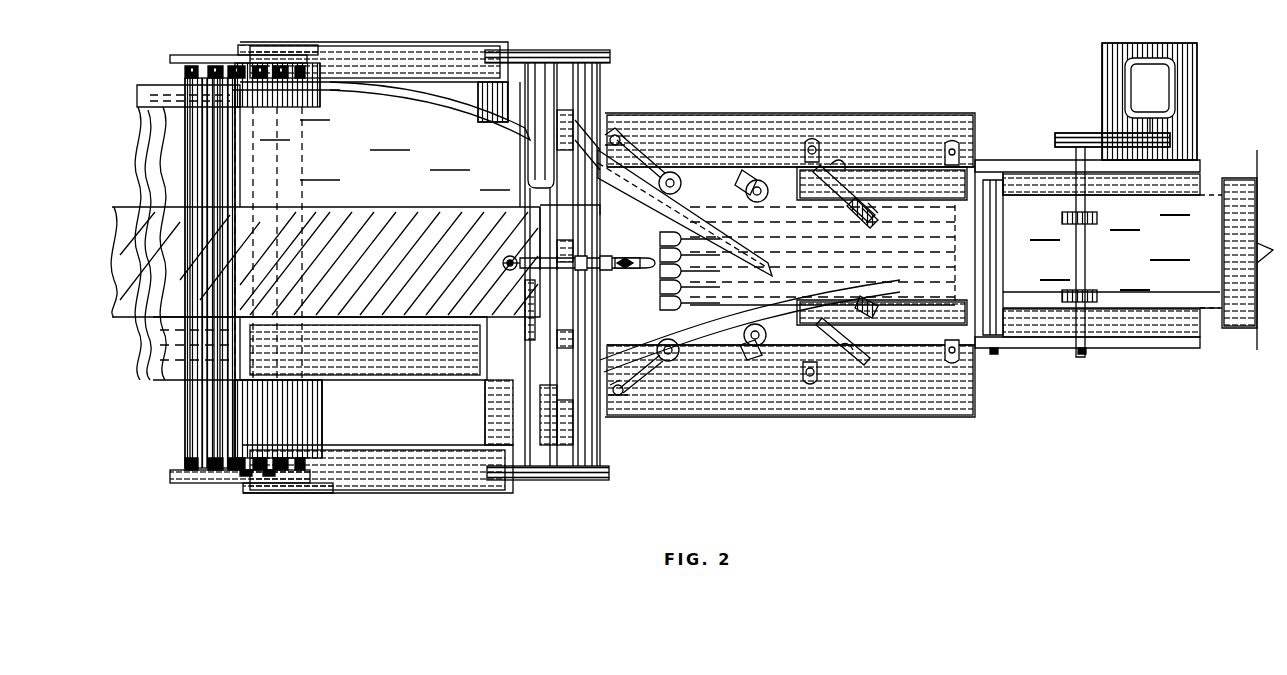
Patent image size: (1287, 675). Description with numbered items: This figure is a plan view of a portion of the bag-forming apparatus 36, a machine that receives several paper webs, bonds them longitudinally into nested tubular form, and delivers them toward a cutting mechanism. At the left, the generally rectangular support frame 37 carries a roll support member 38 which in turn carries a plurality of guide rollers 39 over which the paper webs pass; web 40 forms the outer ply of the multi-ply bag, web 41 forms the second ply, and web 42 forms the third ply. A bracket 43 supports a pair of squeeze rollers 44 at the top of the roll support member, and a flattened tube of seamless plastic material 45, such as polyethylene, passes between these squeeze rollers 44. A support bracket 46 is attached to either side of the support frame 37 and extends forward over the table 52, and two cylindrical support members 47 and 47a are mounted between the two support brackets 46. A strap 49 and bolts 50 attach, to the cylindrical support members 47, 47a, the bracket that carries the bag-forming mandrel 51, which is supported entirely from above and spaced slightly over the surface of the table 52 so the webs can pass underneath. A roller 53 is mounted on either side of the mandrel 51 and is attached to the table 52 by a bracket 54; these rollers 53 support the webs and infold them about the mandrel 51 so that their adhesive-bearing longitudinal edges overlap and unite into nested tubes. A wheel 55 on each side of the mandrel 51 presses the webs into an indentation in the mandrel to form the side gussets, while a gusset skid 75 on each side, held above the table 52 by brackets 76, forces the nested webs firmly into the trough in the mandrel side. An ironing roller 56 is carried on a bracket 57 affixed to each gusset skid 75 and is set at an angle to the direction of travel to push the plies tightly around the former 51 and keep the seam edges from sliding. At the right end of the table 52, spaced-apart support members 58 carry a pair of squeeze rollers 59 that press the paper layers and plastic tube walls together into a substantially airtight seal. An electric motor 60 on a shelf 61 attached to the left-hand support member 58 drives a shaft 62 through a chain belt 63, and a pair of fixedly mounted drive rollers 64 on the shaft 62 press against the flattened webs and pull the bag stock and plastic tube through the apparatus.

The bag-forming apparatus 36 is at (762, 422).
The support frame 37 is at (455, 490).
The roll support member 38 is at (256, 58).
The guide rollers 39 is at (268, 476).
The web 40 is at (145, 97).
The web 41 is at (160, 110).
The web 42 is at (165, 128).
The bracket 43 is at (200, 483).
The squeeze rollers 44 is at (200, 55).
The flattened tube of seamless plastic material 45 is at (182, 286).
The support bracket 46 is at (538, 52).
The cylindrical support member 47 is at (532, 178).
The cylindrical support member 47a is at (600, 97).
The strap 49 is at (525, 268).
The bolts 50 is at (515, 260).
The bag-forming mandrel 51 is at (538, 205).
The table 52 is at (710, 410).
The roller 53 is at (675, 172).
The bracket 54 is at (615, 135).
The wheel 55 is at (765, 182).
The ironing roller 56 is at (878, 218).
The bracket 57 is at (852, 170).
The support members 58 is at (1010, 170).
The squeeze rollers 59 is at (994, 272).
The electric motor 60 is at (1135, 98).
The shelf 61 is at (1185, 90).
The shaft 62 is at (1085, 187).
The chain belt 63 is at (1080, 133).
The drive rollers 64 is at (1088, 225).
The gusset skid 75 is at (932, 195).
The brackets 76 is at (805, 148).